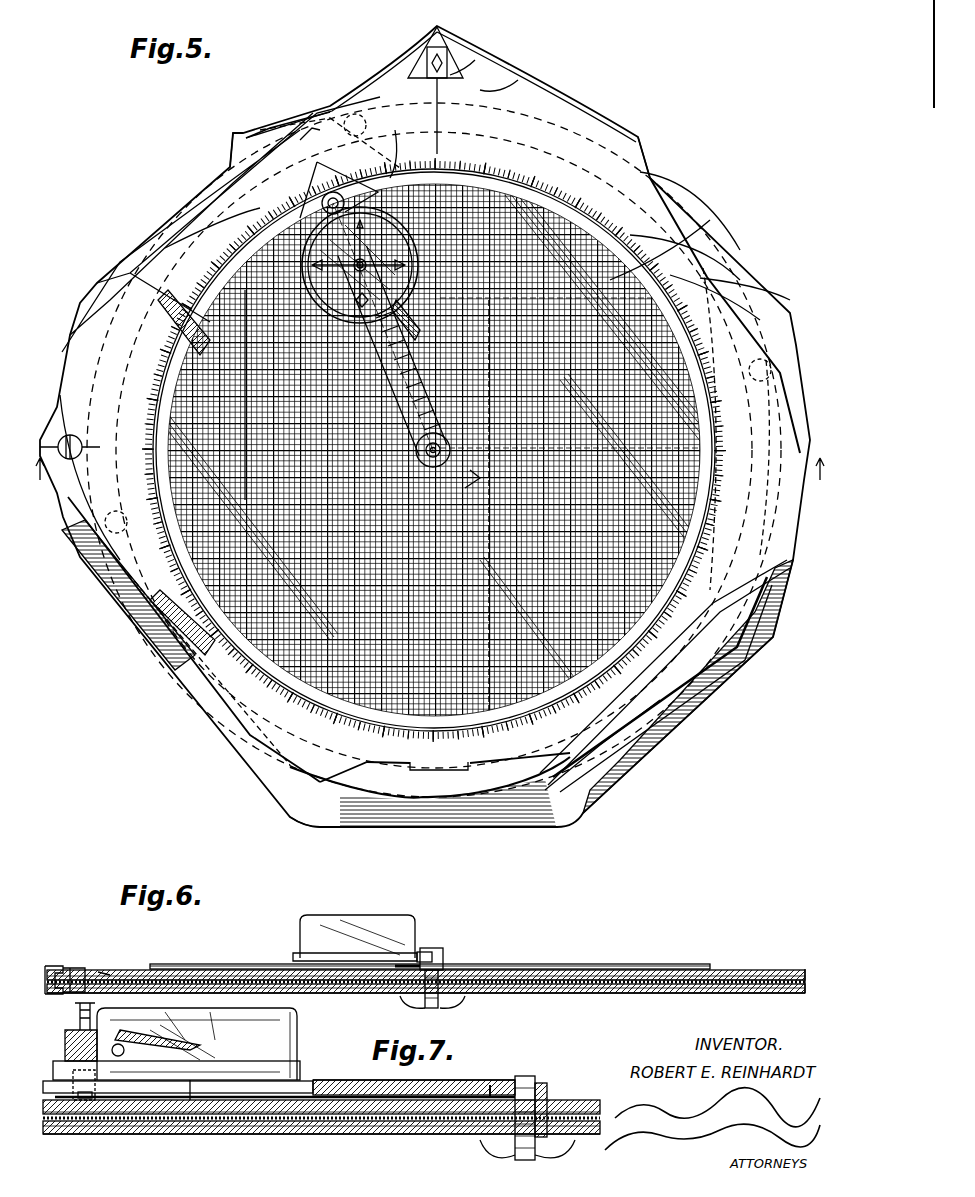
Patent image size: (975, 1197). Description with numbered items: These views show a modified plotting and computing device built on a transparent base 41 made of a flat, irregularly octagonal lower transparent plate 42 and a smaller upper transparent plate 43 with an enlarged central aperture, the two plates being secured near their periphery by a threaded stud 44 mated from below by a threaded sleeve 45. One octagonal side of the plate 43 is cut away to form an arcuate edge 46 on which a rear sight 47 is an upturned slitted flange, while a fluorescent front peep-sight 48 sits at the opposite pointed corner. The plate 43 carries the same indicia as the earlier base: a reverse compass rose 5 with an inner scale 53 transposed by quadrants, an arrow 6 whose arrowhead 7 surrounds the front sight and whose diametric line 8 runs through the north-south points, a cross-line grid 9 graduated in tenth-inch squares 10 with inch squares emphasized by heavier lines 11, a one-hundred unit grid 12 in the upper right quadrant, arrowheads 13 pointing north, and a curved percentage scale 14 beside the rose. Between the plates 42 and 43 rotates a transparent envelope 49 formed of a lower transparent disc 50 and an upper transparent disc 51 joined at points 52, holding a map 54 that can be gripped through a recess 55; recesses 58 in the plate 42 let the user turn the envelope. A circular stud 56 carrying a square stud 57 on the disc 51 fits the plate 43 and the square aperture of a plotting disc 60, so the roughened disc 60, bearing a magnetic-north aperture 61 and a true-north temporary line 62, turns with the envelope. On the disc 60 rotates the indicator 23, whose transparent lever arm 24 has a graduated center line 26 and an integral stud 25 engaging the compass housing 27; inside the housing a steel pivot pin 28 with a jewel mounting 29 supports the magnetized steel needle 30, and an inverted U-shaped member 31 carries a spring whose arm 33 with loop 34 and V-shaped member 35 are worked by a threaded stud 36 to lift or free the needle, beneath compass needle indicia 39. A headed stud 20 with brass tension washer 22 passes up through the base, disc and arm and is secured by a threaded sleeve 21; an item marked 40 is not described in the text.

In FIG. 5, the reverse compass rose 5 is at (160, 246).
In FIG. 5, the arrow 6 is at (430, 273).
In FIG. 5, the arrowhead 7 is at (412, 282).
In FIG. 5, the diametric line 8 is at (439, 118).
In FIG. 5, the cross-line grid 9 is at (655, 200).
In FIG. 5, the one-tenth inch squares 10 is at (540, 200).
In FIG. 5, the heavier lines 11 is at (700, 260).
In FIG. 5, the 100 unit grid 12 is at (730, 290).
In FIG. 5, the arrowheads 13 is at (170, 318).
In FIG. 5, the curved percentage scale 14 is at (752, 333).
In FIG. 6, the headed stud 20 is at (408, 1002).
In FIG. 7, the headed stud 20 is at (505, 1150).
In FIG. 5, the threaded sleeve 21 is at (425, 462).
In FIG. 6, the threaded sleeve 21 is at (440, 962).
In FIG. 7, the threaded sleeve 21 is at (530, 1076).
In FIG. 6, the brass tension washer 22 is at (455, 1004).
In FIG. 7, the brass tension washer 22 is at (560, 1148).
In FIG. 5, the indicator 23 is at (392, 405).
In FIG. 6, the indicator 23 is at (290, 961).
In FIG. 7, the indicator 23 is at (326, 1080).
In FIG. 5, the transparent lever arm 24 is at (380, 360).
In FIG. 6, the transparent lever arm 24 is at (428, 952).
In FIG. 7, the transparent lever arm 24 is at (435, 1082).
In FIG. 7, the integral stud 25 is at (296, 1048).
In FIG. 5, the center line 26 is at (420, 376).
In FIG. 5, the compass housing 27 is at (420, 248).
In FIG. 6, the compass housing 27 is at (300, 932).
In FIG. 7, the compass housing 27 is at (298, 1035).
In FIG. 7, the steel pivot pin 28 is at (215, 1044).
In FIG. 7, the jewel mounting 29 is at (177, 1016).
In FIG. 5, the magnetized steel needle 30 is at (352, 262).
In FIG. 7, the magnetized steel needle 30 is at (128, 1052).
In FIG. 7, the inverted U-shaped member 31 is at (125, 1066).
In FIG. 7, the arm 33 is at (190, 1100).
In FIG. 7, the loop 34 is at (212, 1016).
In FIG. 7, the V-shaped member 35 is at (68, 1050).
In FIG. 5, the threaded stud 36 is at (232, 166).
In FIG. 7, the threaded stud 36 is at (76, 1016).
In FIG. 5, the compass needle indicia 39 is at (368, 298).
In FIG. 7, the stop 40 is at (78, 1100).
In FIG. 5, the transparent base 41 is at (625, 770).
In FIG. 6, the transparent base 41 is at (600, 994).
In FIG. 7, the transparent base 41 is at (375, 1136).
In FIG. 5, the lower transparent plate 42 is at (648, 152).
In FIG. 6, the lower transparent plate 42 is at (688, 994).
In FIG. 7, the lower transparent plate 42 is at (360, 1134).
In FIG. 5, the upper transparent plate 43 is at (640, 166).
In FIG. 6, the upper transparent plate 43 is at (622, 972).
In FIG. 7, the upper transparent plate 43 is at (318, 1116).
In FIG. 5, the threaded stud 44 is at (82, 455).
In FIG. 6, the threaded stud 44 is at (55, 966).
In FIG. 6, the threaded sleeve 45 is at (82, 970).
In FIG. 5, the arcuate edge 46 is at (515, 795).
In FIG. 5, the rear sight 47 is at (445, 780).
In FIG. 5, the front peep-sight 48 is at (445, 50).
In FIG. 5, the transparent envelope 49 is at (178, 202).
In FIG. 6, the transparent envelope 49 is at (738, 978).
In FIG. 7, the transparent envelope 49 is at (432, 1124).
In FIG. 5, the lower transparent disc 50 is at (645, 740).
In FIG. 6, the lower transparent disc 50 is at (714, 992).
In FIG. 7, the lower transparent disc 50 is at (258, 1122).
In FIG. 5, the upper transparent disc 51 is at (210, 188).
In FIG. 6, the upper transparent disc 51 is at (684, 974).
In FIG. 7, the upper transparent disc 51 is at (375, 1097).
In FIG. 5, the attachment points 52 is at (358, 118).
In FIG. 6, the attachment points 52 is at (804, 970).
In FIG. 5, the inner scale 53 is at (505, 180).
In FIG. 5, the map 54 is at (400, 800).
In FIG. 6, the map 54 is at (578, 981).
In FIG. 7, the map 54 is at (565, 1116).
In FIG. 5, the recess 55 is at (325, 812).
In FIG. 6, the circular stud 56 is at (450, 970).
In FIG. 7, the circular stud 56 is at (500, 1085).
In FIG. 7, the square stud 57 is at (548, 1088).
In FIG. 5, the recesses 58 is at (226, 150).
In FIG. 5, the plotting disc 60 is at (760, 290).
In FIG. 6, the plotting disc 60 is at (530, 965).
In FIG. 7, the plotting disc 60 is at (100, 1106).
In FIG. 7, the aperture 61 is at (85, 1100).
In FIG. 5, the temporary line 62 is at (398, 178).